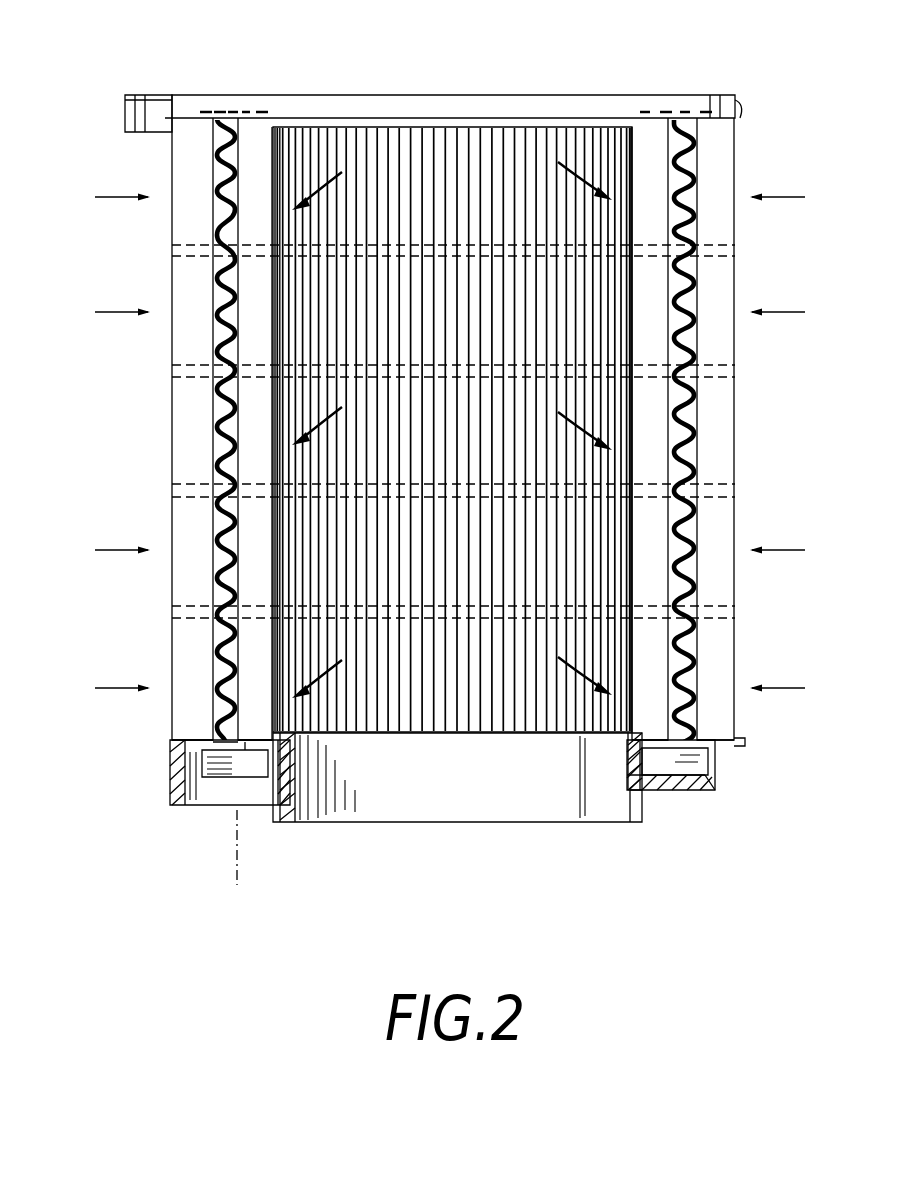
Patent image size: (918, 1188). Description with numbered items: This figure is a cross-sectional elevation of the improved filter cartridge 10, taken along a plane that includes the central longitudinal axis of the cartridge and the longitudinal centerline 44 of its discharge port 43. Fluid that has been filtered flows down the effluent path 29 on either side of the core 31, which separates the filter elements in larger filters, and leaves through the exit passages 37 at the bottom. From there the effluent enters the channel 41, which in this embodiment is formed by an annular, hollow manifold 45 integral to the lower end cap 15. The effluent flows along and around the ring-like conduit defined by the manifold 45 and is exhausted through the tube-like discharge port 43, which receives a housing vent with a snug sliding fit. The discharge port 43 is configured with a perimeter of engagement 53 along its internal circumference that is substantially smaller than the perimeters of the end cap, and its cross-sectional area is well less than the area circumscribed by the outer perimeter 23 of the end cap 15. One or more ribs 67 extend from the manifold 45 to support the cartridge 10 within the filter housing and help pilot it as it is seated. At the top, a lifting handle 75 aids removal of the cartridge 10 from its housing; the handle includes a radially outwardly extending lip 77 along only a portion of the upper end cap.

The filter cartridge 10 is at (411, 72).
The lifting handle 75 is at (169, 95).
The radially outwardly extending lip 77 is at (125, 120).
The effluent path 29 is at (215, 446).
The core 31 is at (222, 400).
The outer perimeter 23 is at (740, 740).
The lower end cap 15 is at (722, 752).
The manifold 45 is at (703, 790).
The channel 41 is at (671, 818).
The rib 67 is at (487, 822).
The perimeter of engagement 53 is at (196, 795).
The discharge port 43 is at (220, 795).
The exit passages 37 is at (232, 745).
The longitudinal centerline 44 is at (237, 885).